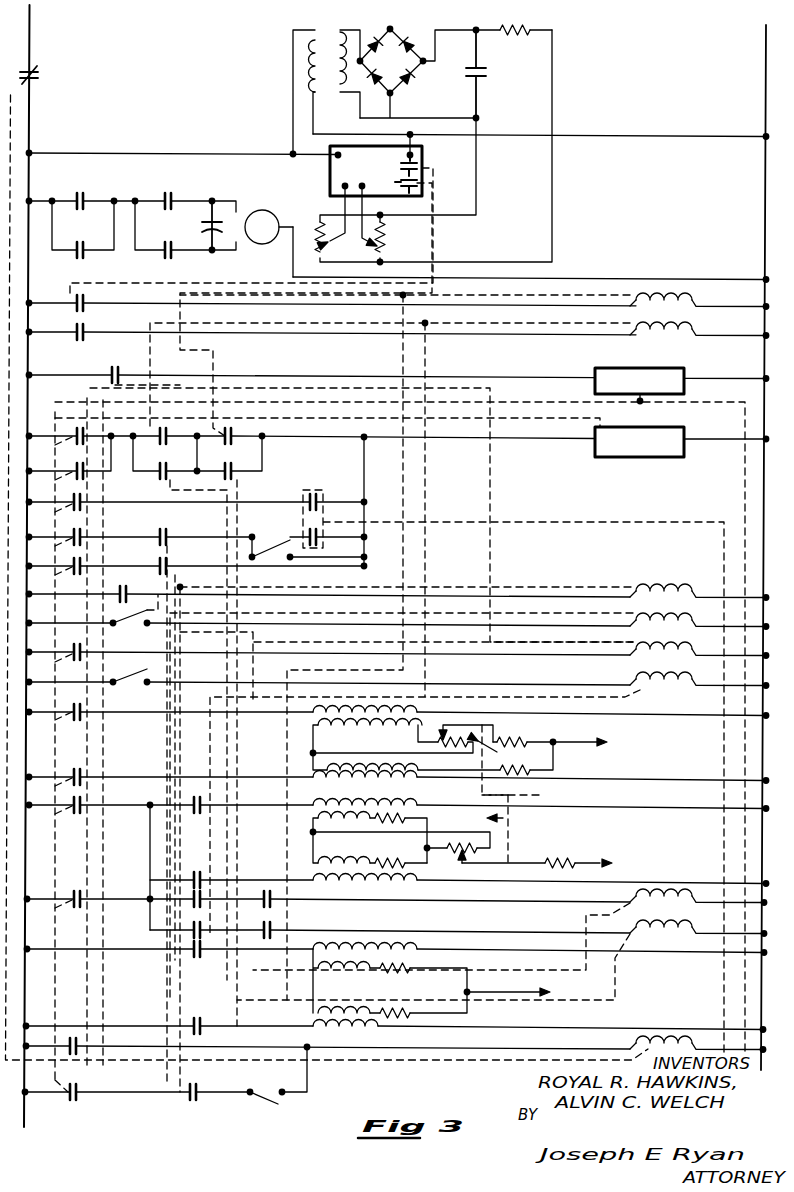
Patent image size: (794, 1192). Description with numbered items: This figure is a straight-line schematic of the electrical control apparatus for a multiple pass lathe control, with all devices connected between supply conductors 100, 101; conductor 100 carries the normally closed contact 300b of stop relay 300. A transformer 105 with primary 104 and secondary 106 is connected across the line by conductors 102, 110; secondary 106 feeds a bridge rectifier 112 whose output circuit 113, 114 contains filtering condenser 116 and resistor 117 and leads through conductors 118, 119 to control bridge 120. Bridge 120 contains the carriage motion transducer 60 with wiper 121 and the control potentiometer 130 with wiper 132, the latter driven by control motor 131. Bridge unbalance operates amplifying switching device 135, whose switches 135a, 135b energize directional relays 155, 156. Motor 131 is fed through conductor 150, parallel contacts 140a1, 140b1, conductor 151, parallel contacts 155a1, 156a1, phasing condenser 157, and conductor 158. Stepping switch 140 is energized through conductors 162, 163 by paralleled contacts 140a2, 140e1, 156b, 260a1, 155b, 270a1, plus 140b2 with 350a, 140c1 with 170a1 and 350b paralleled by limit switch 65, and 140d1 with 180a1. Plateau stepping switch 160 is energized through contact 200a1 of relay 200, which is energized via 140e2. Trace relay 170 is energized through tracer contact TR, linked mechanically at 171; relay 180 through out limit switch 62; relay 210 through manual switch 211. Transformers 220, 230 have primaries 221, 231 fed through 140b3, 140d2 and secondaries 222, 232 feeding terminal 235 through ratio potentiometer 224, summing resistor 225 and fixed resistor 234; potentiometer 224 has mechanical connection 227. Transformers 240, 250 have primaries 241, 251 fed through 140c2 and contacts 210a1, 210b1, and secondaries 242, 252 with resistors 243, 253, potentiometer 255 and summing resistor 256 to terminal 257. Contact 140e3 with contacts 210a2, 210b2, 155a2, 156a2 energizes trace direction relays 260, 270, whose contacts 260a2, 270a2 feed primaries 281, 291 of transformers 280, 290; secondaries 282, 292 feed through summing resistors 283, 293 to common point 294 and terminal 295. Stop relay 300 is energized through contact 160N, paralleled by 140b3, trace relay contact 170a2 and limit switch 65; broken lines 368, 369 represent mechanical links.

The supply conductor 100 is at (31, 15).
The supply conductor 101 is at (758, 30).
The normally closed contact of stop relay 300b is at (38, 76).
The conductor 102 is at (195, 142).
The primary winding 104 is at (312, 69).
The transformer 105 is at (334, 36).
The secondary winding 106 is at (338, 92).
The bridge rectifier 112 is at (400, 68).
The rectifier output conductor 113 is at (445, 30).
The rectifier output conductor 114 is at (437, 108).
The condenser 116 is at (480, 78).
The resistor 117 is at (505, 40).
The conductor 118 is at (478, 165).
The conductor 119 is at (554, 165).
The conductor 110 is at (610, 124).
The amplifying switching device 135 is at (423, 152).
The relay switch contact 135a is at (85, 300).
The relay switch contact 135b is at (85, 329).
The control potentiometer 130 is at (310, 228).
The control bridge 120 is at (370, 258).
The carriage motion transducer 60 is at (378, 225).
The wiper 121 is at (384, 250).
The wiper 132 is at (309, 253).
The conductor 158 is at (578, 277).
The conductor 150 is at (51, 193).
The stepping switch contact 140a1 is at (92, 188).
The conductor 151 is at (138, 193).
The relay contact 155a1 is at (180, 189).
The phasing condenser 157 is at (258, 200).
The control motor 131 is at (240, 262).
The stepping switch contact 140b1 is at (64, 262).
The relay contact 156a1 is at (172, 255).
The directional control relay 155 is at (693, 291).
The directional control relay 156 is at (693, 320).
The relay contact 200a1 is at (110, 370).
The plateau stepping switch 160 is at (662, 391).
The stepping switch contact 140a2 is at (75, 432).
The relay contact 156b is at (171, 420).
The relay contact 155b is at (233, 428).
The stepping switch 140 is at (660, 451).
The conductor 163 is at (695, 439).
The conductor 162 is at (533, 442).
The stepping switch contact 140e1 is at (85, 478).
The relay contact 260a1 is at (173, 456).
The relay contact 270a1 is at (232, 468).
The stepping switch contact 140b2 is at (82, 496).
The differential amplifier relay contact 350a is at (324, 484).
The stepping switch contact 140c1 is at (82, 530).
The trace relay contact 170a1 is at (176, 522).
The differential amplifier relay contact 350b is at (310, 524).
The limit switch 65 is at (268, 548).
The stepping switch contact 140d1 is at (82, 560).
The relay contact 180a1 is at (166, 560).
The tracer contact TR is at (118, 592).
The trace relay 170 is at (657, 593).
The out limit switch 62 is at (118, 612).
The relay 180 is at (668, 622).
The stepping switch contact 140e2 is at (82, 646).
The relay 200 is at (675, 651).
The manually operable switch 211 is at (135, 670).
The relay 210 is at (672, 695).
The stepping switch contact 140b3 is at (82, 706).
The primary winding 221 is at (400, 708).
The secondary winding 222 is at (391, 740).
The secondary winding 232 is at (380, 766).
The ratio potentiometer 224 is at (437, 736).
The summing resistor 225 is at (528, 732).
The transformer 220 is at (503, 760).
The fixed resistor 234 is at (545, 765).
The output terminal 235 is at (607, 742).
The stepping switch contact 140d2 is at (82, 770).
The primary winding 231 is at (340, 782).
The stepping switch contact 140c2 is at (82, 800).
The relay contact 210a1 is at (231, 860).
The primary winding 241 is at (375, 800).
The transformer 230 is at (425, 790).
The mechanical connection 227 is at (512, 804).
The secondary winding 242 is at (313, 820).
The voltage dropping resistor 243 is at (405, 825).
The transformer 240 is at (518, 825).
The secondary winding 252 is at (401, 847).
The voltage dropping resistor 253 is at (376, 847).
The adjustable potentiometer 255 is at (440, 858).
The summing resistor 256 is at (578, 848).
The output terminal 257 is at (615, 863).
The relay contact 210b1 is at (231, 868).
The primary winding 251 is at (364, 894).
The transformer 250 is at (427, 888).
The stepping switch contact 140e3 is at (82, 892).
The relay contact 210a2 is at (187, 905).
The relay contact 155a2 is at (272, 905).
The trace direction relay 260 is at (636, 889).
The relay contact 210b2 is at (191, 935).
The primary winding 281 is at (270, 937).
The trace direction relay 270 is at (671, 907).
The transformer 280 is at (369, 937).
The relay contact 156a2 is at (192, 969).
The summing resistor 283 is at (400, 950).
The secondary winding 282 is at (310, 969).
The secondary winding 292 is at (392, 988).
The summing resistor 293 is at (397, 1003).
The common point 294 is at (475, 985).
The output terminal 295 is at (552, 992).
The transformer 290 is at (480, 1013).
The relay contact 260a2 is at (202, 976).
The relay contact 270a2 is at (200, 1020).
The primary winding 291 is at (340, 1035).
The stepping switch contact 160N is at (78, 1042).
The stop relay 300 is at (628, 1045).
The link 368 is at (720, 975).
The link 369 is at (720, 990).
The contact 170a2 is at (190, 1100).
The mechanical connection 171 is at (104, 1105).